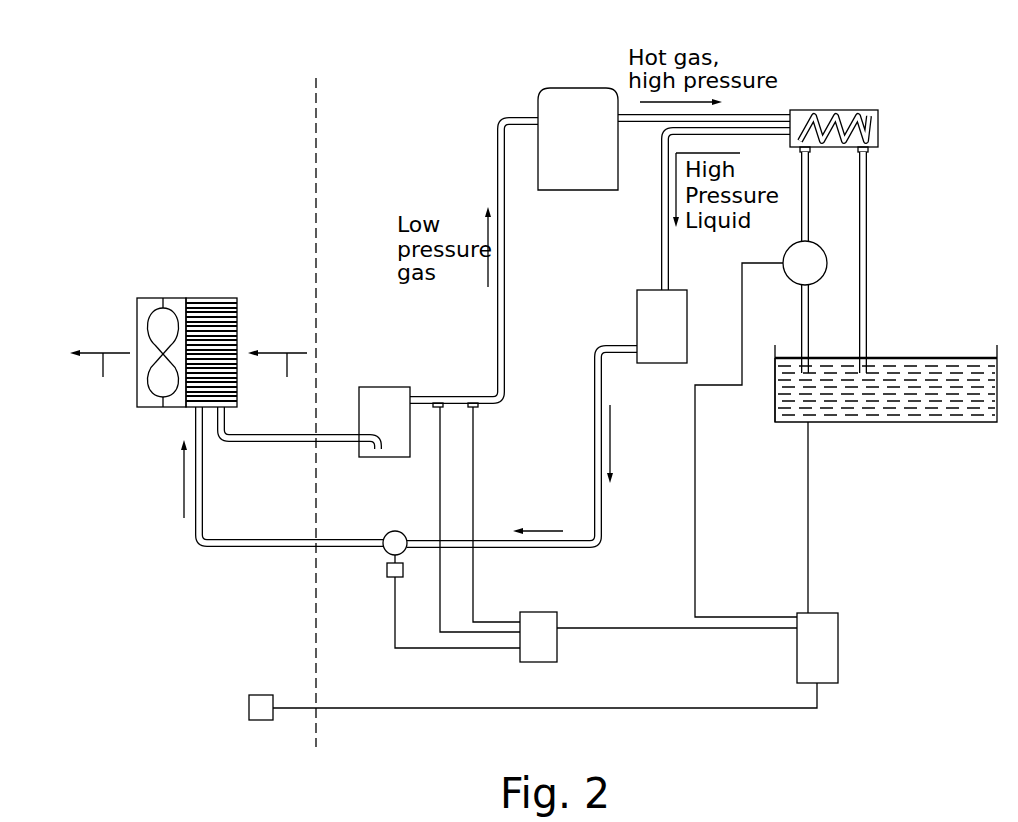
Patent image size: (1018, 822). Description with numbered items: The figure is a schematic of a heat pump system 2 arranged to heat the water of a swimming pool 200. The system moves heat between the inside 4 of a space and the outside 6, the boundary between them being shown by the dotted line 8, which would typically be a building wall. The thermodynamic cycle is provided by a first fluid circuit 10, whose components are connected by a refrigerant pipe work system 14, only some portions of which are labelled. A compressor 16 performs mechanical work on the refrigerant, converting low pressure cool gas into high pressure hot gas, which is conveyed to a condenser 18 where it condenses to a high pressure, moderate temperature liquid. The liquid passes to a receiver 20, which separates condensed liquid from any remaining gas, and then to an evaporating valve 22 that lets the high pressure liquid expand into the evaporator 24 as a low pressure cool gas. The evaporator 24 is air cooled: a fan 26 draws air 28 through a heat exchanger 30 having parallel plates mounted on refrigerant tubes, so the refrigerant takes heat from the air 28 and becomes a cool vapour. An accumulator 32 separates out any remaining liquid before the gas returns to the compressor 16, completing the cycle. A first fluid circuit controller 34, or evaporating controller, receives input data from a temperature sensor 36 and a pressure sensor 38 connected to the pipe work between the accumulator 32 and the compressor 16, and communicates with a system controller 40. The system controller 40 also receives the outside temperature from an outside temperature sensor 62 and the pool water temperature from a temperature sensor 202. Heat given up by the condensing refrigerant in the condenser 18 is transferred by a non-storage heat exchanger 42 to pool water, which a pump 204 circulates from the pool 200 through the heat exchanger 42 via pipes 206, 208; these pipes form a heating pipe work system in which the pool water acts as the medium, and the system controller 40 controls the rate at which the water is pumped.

The system 2 is at (846, 344).
The inside 4 is at (371, 167).
The outside 6 is at (238, 167).
The dotted line 8 is at (317, 214).
The first fluid circuit 10 is at (507, 70).
The refrigerant pipe work system 14 is at (659, 227).
The compressor 16 is at (588, 152).
The condenser 18 is at (853, 111).
The receiver 20 is at (676, 342).
The evaporating valve 22 is at (395, 531).
The evaporator 24 is at (196, 328).
The fan 26 is at (160, 327).
The air 28 is at (188, 377).
The heat exchanger 30 is at (235, 315).
The accumulator 32 is at (378, 387).
The first fluid circuit controller 34 is at (557, 618).
The temperature sensor 36 is at (478, 408).
The pressure sensor 38 is at (439, 403).
The system controller 40 is at (832, 659).
The heat exchanger 42 is at (867, 110).
The outside temperature sensor 62 is at (249, 702).
The swimming pool 200 is at (893, 412).
The temperature sensor 202 is at (786, 421).
The pump 204 is at (812, 262).
The pipe 206 is at (867, 193).
The pipe 208 is at (807, 308).